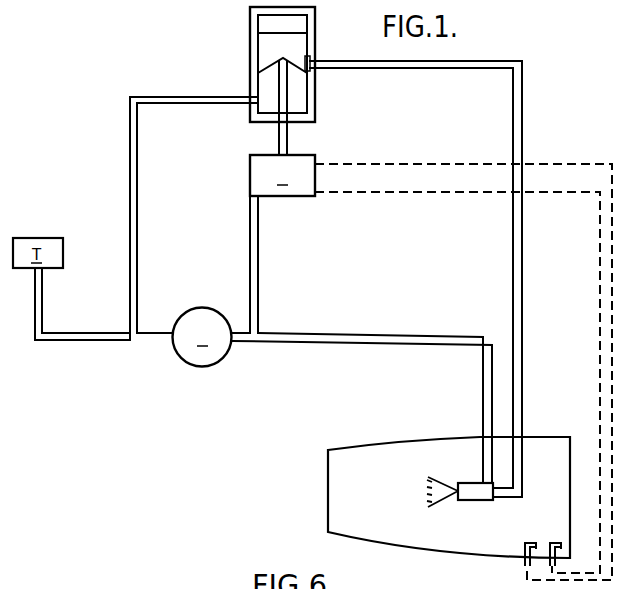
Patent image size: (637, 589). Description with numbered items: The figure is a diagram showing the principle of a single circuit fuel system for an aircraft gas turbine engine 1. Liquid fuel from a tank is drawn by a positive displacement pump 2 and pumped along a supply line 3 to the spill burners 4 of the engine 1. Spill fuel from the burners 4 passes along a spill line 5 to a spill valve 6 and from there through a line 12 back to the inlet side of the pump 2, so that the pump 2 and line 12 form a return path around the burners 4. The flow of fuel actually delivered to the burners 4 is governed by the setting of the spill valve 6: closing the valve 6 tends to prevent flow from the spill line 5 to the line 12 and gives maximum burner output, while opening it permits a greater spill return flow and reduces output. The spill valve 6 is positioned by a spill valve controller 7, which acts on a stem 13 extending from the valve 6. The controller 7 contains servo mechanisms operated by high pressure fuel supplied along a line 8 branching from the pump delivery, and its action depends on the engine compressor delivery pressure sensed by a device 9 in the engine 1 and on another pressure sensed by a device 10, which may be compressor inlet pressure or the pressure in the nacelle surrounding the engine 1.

The gas turbine engine 1 is at (398, 450).
The positive displacement pump 2 is at (202, 337).
The supply line 3 is at (380, 336).
The spill burners 4 is at (474, 500).
The spill line 5 is at (513, 112).
The spill valve 6 is at (234, 51).
The spill valve controller 7 is at (282, 175).
The line 8 is at (258, 283).
The device 9 is at (527, 542).
The device 10 is at (555, 542).
The line 12 is at (137, 194).
The stem 13 is at (286, 145).